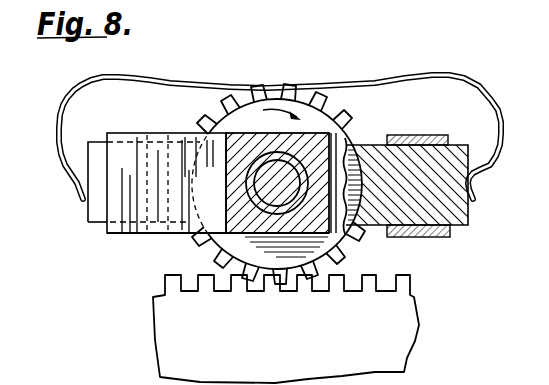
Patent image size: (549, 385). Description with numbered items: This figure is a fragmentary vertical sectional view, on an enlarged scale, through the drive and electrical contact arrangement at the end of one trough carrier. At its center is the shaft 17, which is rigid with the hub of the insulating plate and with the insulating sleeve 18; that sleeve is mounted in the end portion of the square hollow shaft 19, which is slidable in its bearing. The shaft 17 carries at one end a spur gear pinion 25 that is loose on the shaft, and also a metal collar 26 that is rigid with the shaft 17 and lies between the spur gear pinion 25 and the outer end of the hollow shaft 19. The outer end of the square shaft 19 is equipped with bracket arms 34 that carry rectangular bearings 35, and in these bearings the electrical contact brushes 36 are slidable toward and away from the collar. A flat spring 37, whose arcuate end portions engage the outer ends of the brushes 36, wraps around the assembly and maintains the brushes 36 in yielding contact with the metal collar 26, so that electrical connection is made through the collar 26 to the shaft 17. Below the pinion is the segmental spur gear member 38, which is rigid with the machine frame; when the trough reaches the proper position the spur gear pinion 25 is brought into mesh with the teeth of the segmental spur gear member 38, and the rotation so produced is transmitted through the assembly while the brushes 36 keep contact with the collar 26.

The shaft 17 is at (272, 196).
The insulating sleeve 18 is at (333, 135).
The square hollow shaft 19 is at (263, 133).
The spur gear pinion 25 is at (298, 74).
The collar 26 is at (304, 107).
The bracket arms 34 is at (350, 143).
The rectangular bearings 35 is at (137, 132).
The electrical contact brushes 36 is at (90, 213).
The flat spring 37 is at (189, 84).
The segmental spur gear member 38 is at (413, 286).